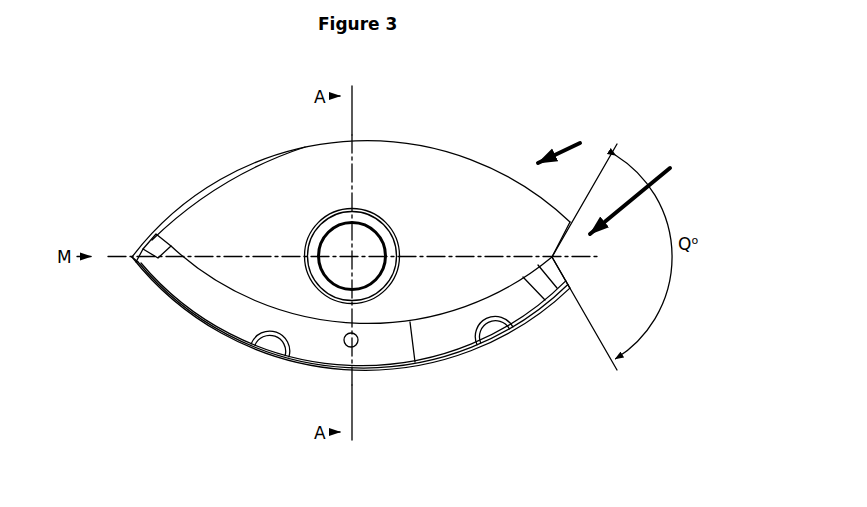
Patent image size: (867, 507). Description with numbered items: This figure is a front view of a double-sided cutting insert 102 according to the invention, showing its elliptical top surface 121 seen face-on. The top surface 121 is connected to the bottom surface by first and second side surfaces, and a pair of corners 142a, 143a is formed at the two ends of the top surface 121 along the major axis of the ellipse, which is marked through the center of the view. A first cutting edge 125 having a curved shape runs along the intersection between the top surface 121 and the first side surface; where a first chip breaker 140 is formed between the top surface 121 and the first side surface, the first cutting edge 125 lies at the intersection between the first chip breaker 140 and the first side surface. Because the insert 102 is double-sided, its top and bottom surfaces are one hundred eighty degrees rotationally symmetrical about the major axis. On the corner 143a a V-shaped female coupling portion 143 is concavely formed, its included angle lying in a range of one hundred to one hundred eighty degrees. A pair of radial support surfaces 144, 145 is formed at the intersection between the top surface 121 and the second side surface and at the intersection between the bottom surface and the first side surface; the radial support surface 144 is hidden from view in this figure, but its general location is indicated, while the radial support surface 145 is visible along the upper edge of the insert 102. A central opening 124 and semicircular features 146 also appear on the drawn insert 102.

The cutting insert 102 is at (133, 133).
The top surface 121 is at (458, 180).
The central opening 124 is at (362, 236).
The first cutting edge 125 is at (440, 363).
The first chip breaker 140 is at (393, 352).
The corner 142a is at (124, 274).
The female coupling portion 143 is at (649, 182).
The corner 143a is at (594, 272).
The radial support surface 144 is at (575, 139).
The radial support surface 145 is at (238, 166).
The semicircular notch 146 is at (268, 349).